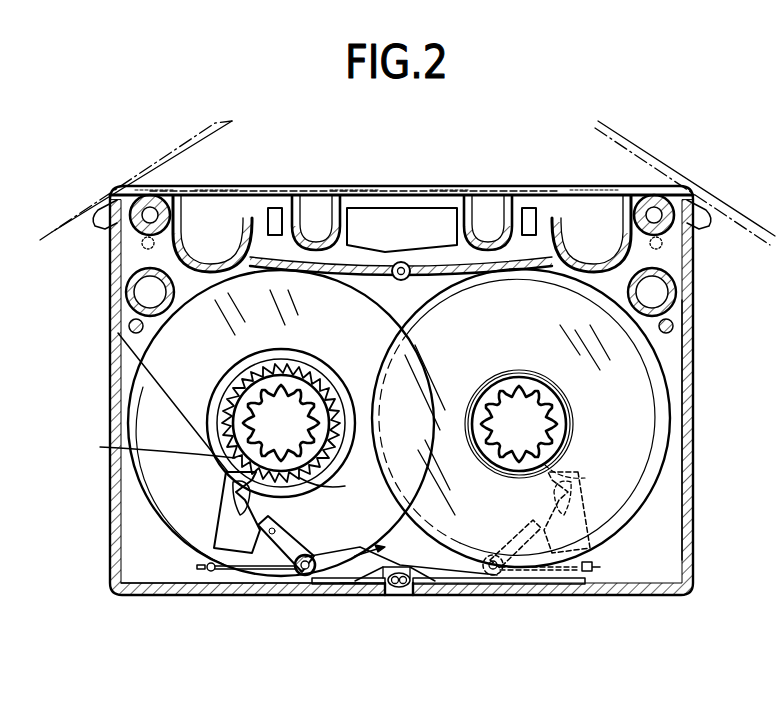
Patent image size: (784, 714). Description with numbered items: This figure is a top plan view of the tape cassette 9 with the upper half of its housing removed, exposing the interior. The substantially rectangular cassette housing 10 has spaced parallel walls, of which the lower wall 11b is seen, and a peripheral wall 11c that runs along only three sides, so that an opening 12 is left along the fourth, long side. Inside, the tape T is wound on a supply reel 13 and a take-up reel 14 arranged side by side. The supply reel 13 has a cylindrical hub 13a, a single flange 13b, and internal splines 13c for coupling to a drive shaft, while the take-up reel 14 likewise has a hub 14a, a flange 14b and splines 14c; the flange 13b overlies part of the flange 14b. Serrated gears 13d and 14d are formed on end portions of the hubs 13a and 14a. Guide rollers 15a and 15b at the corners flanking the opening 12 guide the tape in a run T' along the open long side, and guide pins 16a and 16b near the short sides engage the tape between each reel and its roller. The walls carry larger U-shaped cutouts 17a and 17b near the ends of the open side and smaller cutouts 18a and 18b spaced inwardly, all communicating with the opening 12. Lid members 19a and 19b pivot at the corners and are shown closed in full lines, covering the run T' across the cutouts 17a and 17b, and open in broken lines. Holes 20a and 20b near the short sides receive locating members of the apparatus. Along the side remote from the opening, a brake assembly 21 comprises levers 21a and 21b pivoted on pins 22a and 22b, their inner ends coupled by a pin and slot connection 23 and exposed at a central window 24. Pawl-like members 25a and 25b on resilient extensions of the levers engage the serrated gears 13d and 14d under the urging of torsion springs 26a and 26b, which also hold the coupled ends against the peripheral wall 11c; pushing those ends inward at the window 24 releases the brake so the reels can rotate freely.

The tape cassette 9 is at (371, 590).
The cassette housing 10 is at (689, 367).
The wall 11b is at (162, 573).
The peripheral wall 11c is at (690, 477).
The opening 12 is at (327, 188).
The supply reel 13 is at (153, 398).
The cylindrical hub 13a is at (240, 476).
The flange 13b is at (182, 505).
The splines 13c is at (252, 405).
The serrated gear 13d is at (316, 472).
The take-up reel 14 is at (648, 510).
The cylindrical hub 14a is at (570, 428).
The flange 14b is at (662, 450).
The splines 14c is at (500, 405).
The serrated gear 14d is at (582, 477).
The guide roller 15a is at (113, 230).
The guide roller 15b is at (705, 203).
The guide pin 16a is at (130, 328).
The guide pin 16b is at (672, 326).
The U-shaped cutout 17a is at (185, 228).
The U-shaped cutout 17b is at (560, 226).
The U-shaped cutout 18a is at (300, 228).
The U-shaped cutout 18b is at (477, 228).
The lid member 19a is at (207, 188).
The lid member 19b is at (627, 187).
The hole 20a is at (146, 292).
The hole 20b is at (660, 288).
The brake assembly 21 is at (368, 553).
The lever 21a is at (262, 550).
The lever 21b is at (460, 572).
The pin 22a is at (305, 578).
The pin 22b is at (520, 585).
The pin and slot connection 23 is at (405, 588).
The aperture or window 24 is at (390, 592).
The pawl-like member 25a is at (228, 482).
The pawl-like member 25b is at (536, 512).
The torsion spring 26a is at (218, 574).
The torsion spring 26b is at (585, 575).
The tape T is at (268, 454).
The tape run T' is at (355, 166).